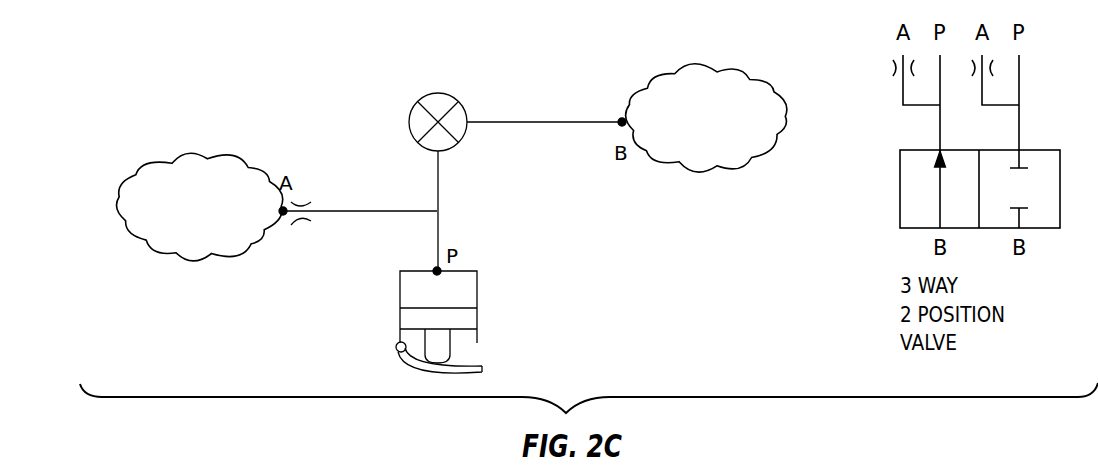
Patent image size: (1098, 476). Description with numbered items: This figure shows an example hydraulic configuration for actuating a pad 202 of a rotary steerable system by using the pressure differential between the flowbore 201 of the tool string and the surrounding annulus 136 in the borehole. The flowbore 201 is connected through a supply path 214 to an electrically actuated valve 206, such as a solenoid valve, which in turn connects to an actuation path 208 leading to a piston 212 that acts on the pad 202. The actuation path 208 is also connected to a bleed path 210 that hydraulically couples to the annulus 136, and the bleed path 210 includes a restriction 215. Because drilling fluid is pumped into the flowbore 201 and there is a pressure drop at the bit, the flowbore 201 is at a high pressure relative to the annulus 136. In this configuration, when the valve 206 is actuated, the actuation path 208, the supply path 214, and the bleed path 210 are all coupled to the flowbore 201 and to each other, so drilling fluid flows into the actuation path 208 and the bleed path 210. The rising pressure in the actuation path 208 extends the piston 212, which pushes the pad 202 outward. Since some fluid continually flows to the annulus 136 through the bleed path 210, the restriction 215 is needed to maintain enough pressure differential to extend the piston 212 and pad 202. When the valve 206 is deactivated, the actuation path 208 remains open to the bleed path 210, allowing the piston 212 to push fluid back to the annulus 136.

The annulus 136 is at (165, 165).
The flowbore 201 is at (743, 75).
The pad 202 is at (482, 368).
The electrically actuated valve 206 is at (438, 93).
The actuation path 208 is at (440, 174).
The bleed path 210 is at (331, 211).
The piston 212 is at (467, 318).
The supply path 214 is at (557, 121).
The restriction 215 is at (300, 224).